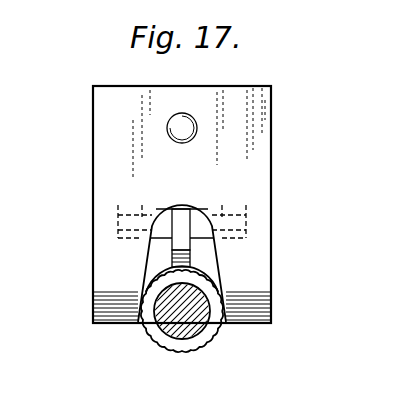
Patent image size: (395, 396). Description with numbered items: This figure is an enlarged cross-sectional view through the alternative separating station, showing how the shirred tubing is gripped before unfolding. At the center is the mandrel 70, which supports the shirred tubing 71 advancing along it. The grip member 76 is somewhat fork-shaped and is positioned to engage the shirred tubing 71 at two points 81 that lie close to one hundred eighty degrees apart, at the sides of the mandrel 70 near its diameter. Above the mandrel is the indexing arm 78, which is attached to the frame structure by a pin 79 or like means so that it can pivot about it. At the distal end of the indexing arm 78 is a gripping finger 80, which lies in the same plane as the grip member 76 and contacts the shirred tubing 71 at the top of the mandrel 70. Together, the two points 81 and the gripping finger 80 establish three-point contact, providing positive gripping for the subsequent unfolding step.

The mandrel 70 is at (177, 330).
The shirred tubing 71 is at (211, 347).
The grip member 76 is at (102, 133).
The indexing arm 78 is at (163, 222).
The pin 79 is at (118, 212).
The gripping finger 80 is at (172, 256).
The points 81 is at (212, 265).